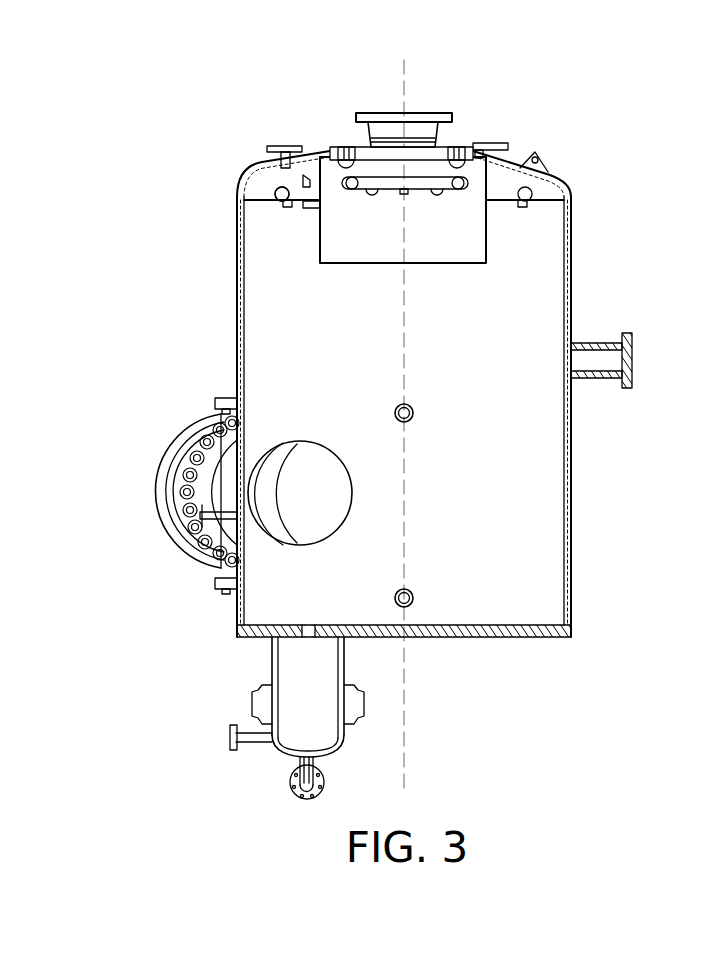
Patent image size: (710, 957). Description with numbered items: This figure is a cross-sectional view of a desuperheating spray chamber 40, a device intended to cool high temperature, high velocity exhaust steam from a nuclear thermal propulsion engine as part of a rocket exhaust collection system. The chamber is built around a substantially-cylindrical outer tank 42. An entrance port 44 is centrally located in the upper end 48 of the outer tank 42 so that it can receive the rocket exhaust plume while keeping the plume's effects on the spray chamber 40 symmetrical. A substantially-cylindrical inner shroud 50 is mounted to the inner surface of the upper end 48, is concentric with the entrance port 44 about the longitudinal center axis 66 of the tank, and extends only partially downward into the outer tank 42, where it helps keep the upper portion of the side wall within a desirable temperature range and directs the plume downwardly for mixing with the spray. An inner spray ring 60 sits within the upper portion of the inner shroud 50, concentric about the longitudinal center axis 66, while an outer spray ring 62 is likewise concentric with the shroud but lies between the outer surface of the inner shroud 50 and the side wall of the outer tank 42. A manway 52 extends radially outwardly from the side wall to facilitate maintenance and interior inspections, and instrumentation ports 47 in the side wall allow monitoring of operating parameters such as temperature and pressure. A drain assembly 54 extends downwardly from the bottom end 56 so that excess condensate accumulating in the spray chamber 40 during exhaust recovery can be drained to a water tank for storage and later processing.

The desuperheating spray chamber 40 is at (461, 348).
The outer tank 42 is at (583, 428).
The entrance port 44 is at (437, 106).
The instrumentation ports 47 is at (375, 411).
The upper end 48 is at (254, 170).
The inner shroud 50 is at (440, 279).
The manway 52 is at (170, 565).
The drain assembly 54 is at (236, 706).
The bottom end 56 is at (474, 648).
The inner spray ring 60 is at (385, 200).
The outer spray ring 62 is at (282, 212).
The longitudinal center axis 66 is at (403, 718).